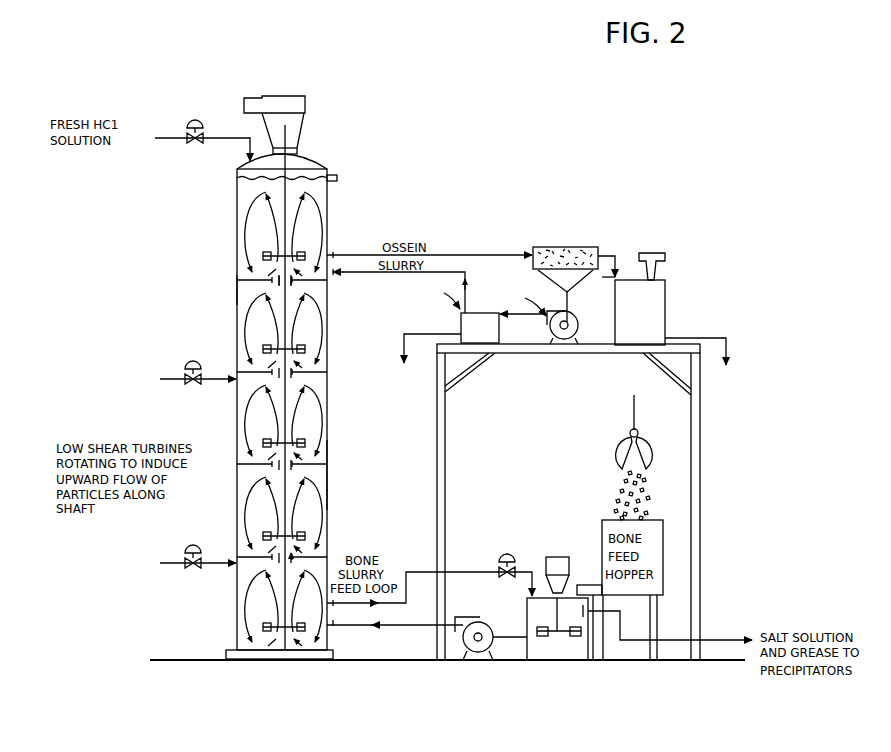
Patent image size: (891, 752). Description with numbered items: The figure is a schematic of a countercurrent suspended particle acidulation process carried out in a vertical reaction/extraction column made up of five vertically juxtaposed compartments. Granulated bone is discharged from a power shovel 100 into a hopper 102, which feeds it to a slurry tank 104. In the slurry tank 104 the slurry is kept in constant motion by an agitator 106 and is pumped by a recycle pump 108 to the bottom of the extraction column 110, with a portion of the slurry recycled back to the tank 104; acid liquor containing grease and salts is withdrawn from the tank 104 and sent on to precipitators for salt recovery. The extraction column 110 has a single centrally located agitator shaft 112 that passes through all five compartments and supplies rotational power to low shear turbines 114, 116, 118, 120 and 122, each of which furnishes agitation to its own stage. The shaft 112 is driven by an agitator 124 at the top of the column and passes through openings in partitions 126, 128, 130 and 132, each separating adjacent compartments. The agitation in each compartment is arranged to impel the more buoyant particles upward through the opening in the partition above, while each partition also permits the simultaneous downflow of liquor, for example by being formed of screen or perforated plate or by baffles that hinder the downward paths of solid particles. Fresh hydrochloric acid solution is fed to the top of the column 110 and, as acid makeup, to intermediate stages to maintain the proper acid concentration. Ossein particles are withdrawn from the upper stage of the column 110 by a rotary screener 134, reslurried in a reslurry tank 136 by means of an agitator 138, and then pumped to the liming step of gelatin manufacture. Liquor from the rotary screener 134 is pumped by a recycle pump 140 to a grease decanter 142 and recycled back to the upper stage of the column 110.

The power shovel 100 is at (614, 446).
The hopper 102 is at (645, 521).
The slurry tank 104 is at (586, 662).
The agitator 106 is at (557, 558).
The recycle pump 108 is at (476, 621).
The extraction column 110 is at (366, 497).
The agitator shaft 112 is at (286, 513).
The low shear turbine 114 is at (263, 627).
The low shear turbine 116 is at (305, 536).
The low shear turbine 118 is at (305, 443).
The low shear turbine 120 is at (263, 349).
The low shear turbine 122 is at (263, 256).
The agitator 124 is at (304, 105).
The partition 126 is at (237, 575).
The partition 128 is at (327, 475).
The partition 130 is at (237, 385).
The partition 132 is at (237, 290).
The rotary screener 134 is at (533, 250).
The reslurry tank 136 is at (662, 325).
The agitator 138 is at (665, 258).
The recycle pump 140 is at (572, 322).
The grease decanter 142 is at (499, 332).